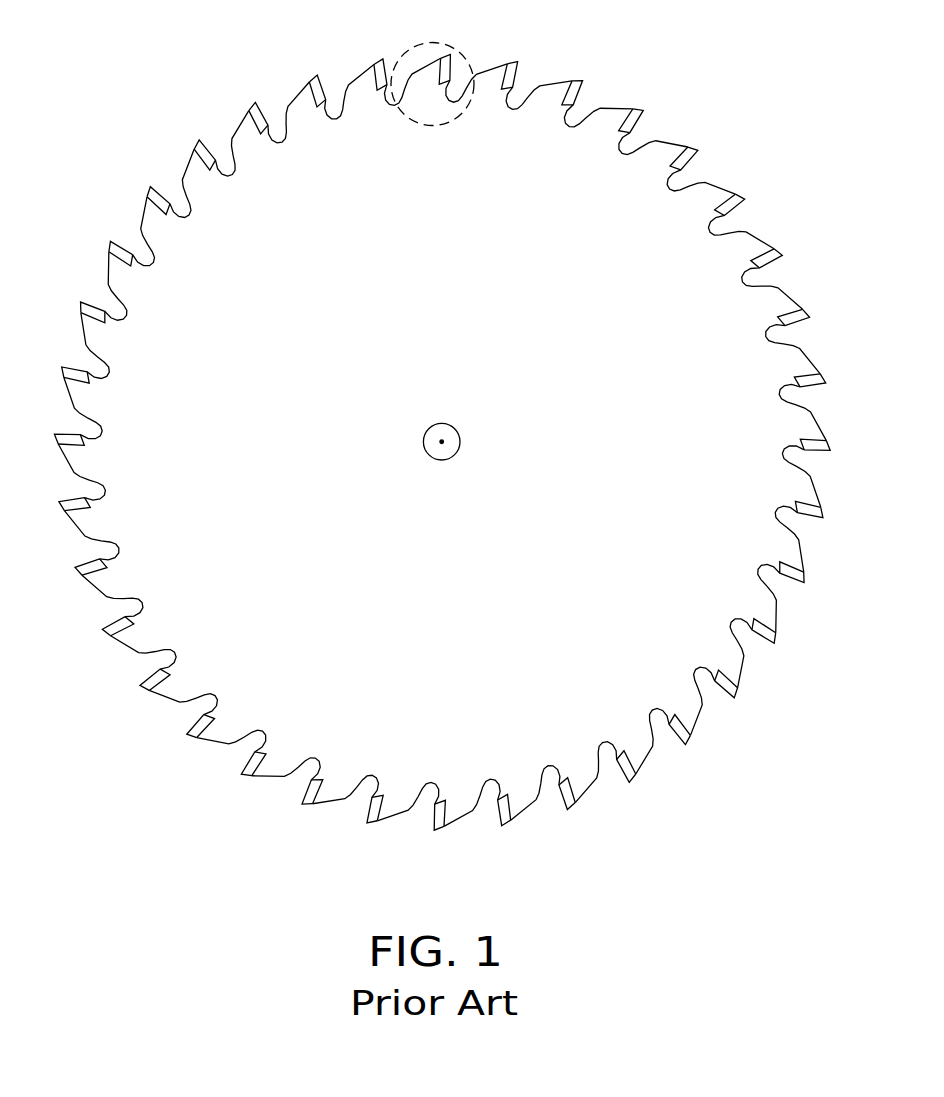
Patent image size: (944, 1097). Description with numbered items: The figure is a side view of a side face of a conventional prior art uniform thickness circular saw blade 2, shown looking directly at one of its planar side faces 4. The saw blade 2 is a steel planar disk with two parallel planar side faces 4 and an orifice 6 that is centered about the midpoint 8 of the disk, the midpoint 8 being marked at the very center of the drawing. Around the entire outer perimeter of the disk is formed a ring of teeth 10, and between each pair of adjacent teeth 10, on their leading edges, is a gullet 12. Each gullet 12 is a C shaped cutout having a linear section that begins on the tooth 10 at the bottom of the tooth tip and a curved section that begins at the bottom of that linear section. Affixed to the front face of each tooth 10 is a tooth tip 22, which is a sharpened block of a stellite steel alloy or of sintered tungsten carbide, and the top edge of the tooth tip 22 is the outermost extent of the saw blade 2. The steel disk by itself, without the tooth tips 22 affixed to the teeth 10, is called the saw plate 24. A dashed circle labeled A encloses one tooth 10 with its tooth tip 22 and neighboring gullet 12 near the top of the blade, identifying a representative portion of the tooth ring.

The saw blade 2 is at (461, 444).
The side face 4 is at (750, 430).
The orifice 6 is at (452, 448).
The midpoint 8 is at (442, 442).
The tooth 10 is at (195, 175).
The gullet 12 is at (433, 790).
The tooth tip 22 is at (120, 240).
The saw plate 24 is at (668, 217).
The detail region A is at (443, 123).